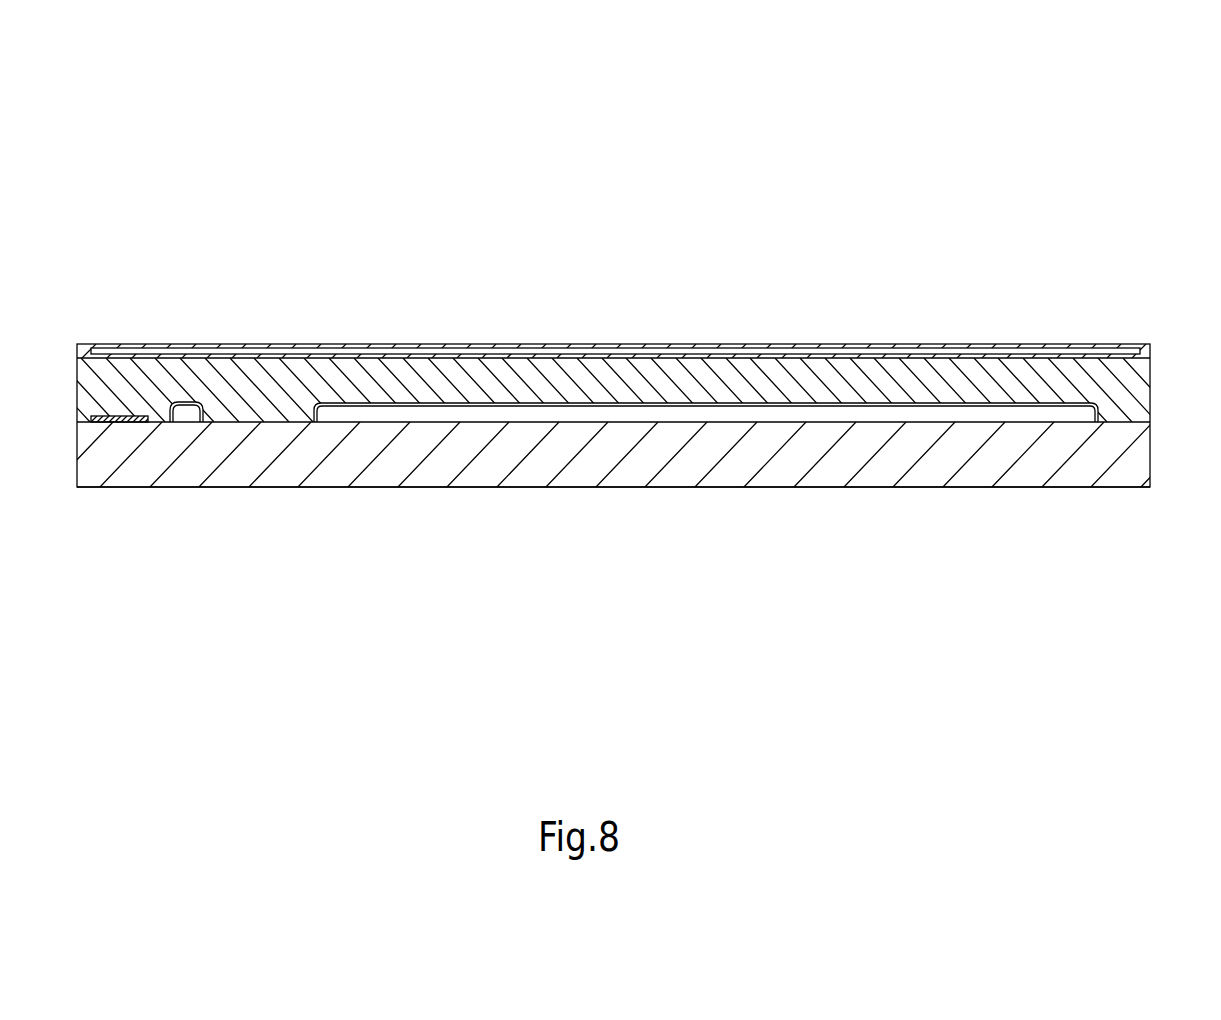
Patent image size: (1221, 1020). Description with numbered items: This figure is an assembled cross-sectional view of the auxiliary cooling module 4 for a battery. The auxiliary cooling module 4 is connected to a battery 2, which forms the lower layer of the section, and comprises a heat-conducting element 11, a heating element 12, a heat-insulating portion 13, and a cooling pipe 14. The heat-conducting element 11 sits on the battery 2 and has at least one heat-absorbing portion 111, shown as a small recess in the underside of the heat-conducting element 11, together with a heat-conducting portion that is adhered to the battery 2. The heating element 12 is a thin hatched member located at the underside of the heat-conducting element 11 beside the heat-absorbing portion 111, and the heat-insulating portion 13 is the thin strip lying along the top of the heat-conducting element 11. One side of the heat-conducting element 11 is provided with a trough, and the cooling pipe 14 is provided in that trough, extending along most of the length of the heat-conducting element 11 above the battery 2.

The auxiliary cooling module 4 is at (1125, 110).
The heat-insulating portion 13 is at (95, 347).
The heat-conducting element 11 is at (303, 366).
The heat-absorbing portion 111 is at (170, 400).
The cooling pipe 14 is at (448, 412).
The heating element 12 is at (110, 419).
The battery 2 is at (165, 448).